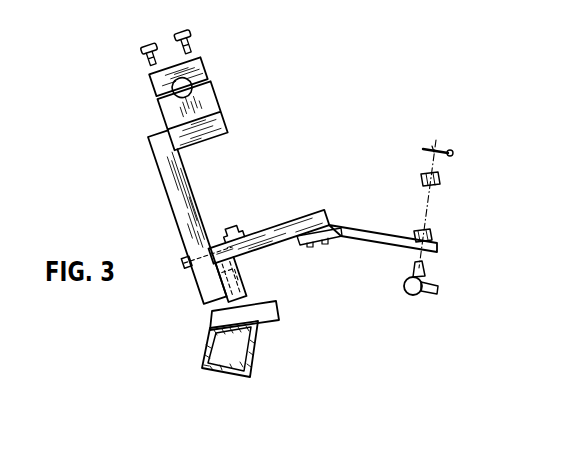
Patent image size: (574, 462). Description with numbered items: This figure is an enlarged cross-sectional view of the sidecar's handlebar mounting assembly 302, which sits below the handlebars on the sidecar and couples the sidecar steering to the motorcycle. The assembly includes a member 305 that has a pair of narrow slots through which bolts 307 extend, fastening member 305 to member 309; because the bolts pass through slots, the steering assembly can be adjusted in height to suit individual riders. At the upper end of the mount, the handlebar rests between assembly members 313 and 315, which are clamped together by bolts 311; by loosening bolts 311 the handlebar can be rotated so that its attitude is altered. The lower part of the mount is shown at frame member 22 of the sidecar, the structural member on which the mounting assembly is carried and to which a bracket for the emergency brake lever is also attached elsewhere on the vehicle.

The handlebar mounting assembly 302 is at (332, 150).
The member 305 is at (177, 192).
The bolts 307 is at (187, 266).
The member 309 is at (286, 229).
The bolts 311 is at (177, 33).
The assembly member 313 is at (213, 97).
The assembly member 315 is at (152, 88).
The frame member 22 is at (207, 338).